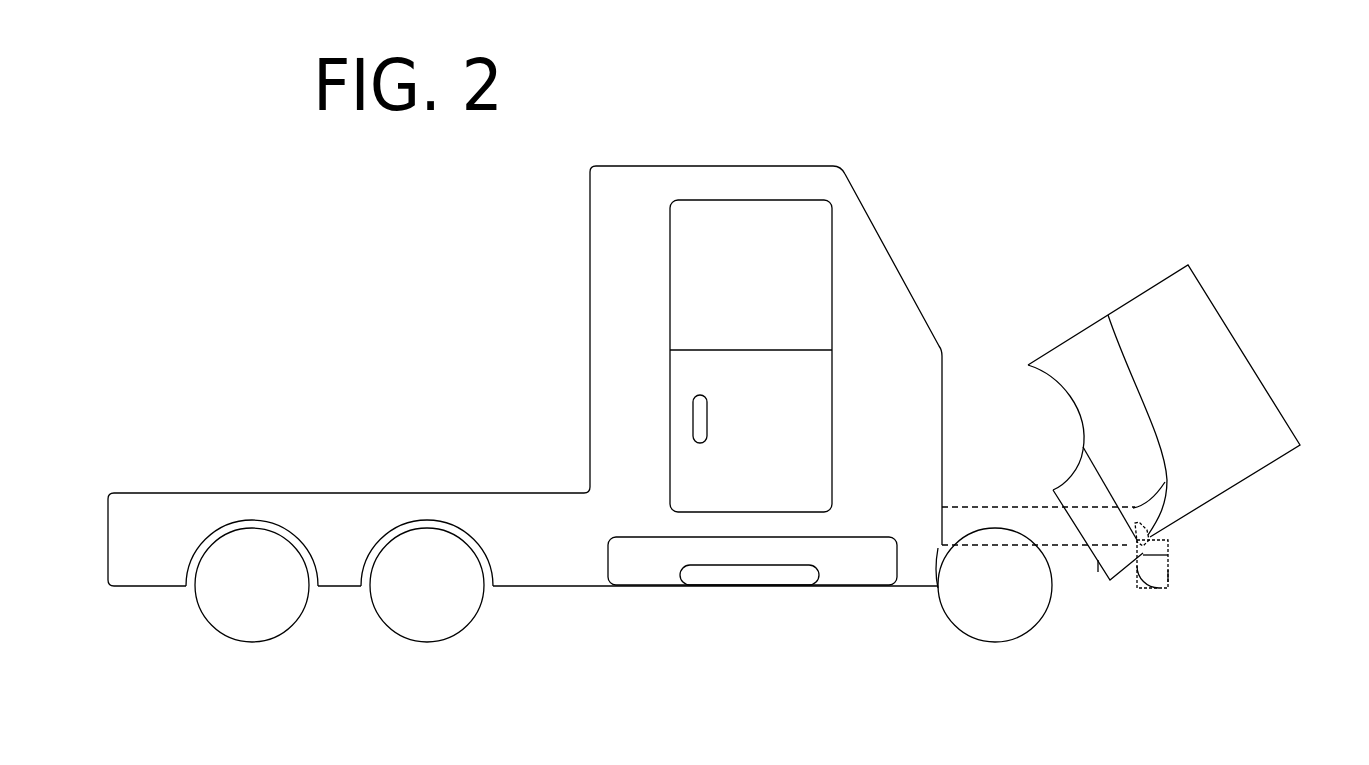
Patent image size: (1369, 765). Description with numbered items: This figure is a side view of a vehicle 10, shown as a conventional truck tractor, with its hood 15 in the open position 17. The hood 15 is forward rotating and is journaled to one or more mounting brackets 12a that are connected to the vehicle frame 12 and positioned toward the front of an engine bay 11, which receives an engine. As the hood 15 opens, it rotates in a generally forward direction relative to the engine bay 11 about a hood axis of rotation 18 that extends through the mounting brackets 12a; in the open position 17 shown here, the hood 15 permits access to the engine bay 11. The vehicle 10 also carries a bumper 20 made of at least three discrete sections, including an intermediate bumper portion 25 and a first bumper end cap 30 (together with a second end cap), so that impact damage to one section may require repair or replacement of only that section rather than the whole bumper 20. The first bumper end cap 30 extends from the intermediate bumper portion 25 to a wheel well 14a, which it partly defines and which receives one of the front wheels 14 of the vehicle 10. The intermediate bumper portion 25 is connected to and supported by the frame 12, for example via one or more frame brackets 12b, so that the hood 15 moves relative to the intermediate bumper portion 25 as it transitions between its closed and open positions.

The vehicle 10 is at (505, 325).
The engine bay 11 is at (1012, 430).
The vehicle frame 12 is at (942, 513).
The mounting brackets 12a is at (1133, 508).
The frame brackets 12b is at (1168, 555).
The front wheels 14 is at (983, 608).
The wheel well 14a is at (940, 550).
The hood 15 is at (1193, 333).
The open position 17 is at (1225, 378).
The hood axis of rotation 18 is at (1149, 532).
The bumper 20 is at (1176, 581).
The intermediate bumper portion 25 is at (1147, 589).
The first bumper end cap 30 is at (1098, 572).